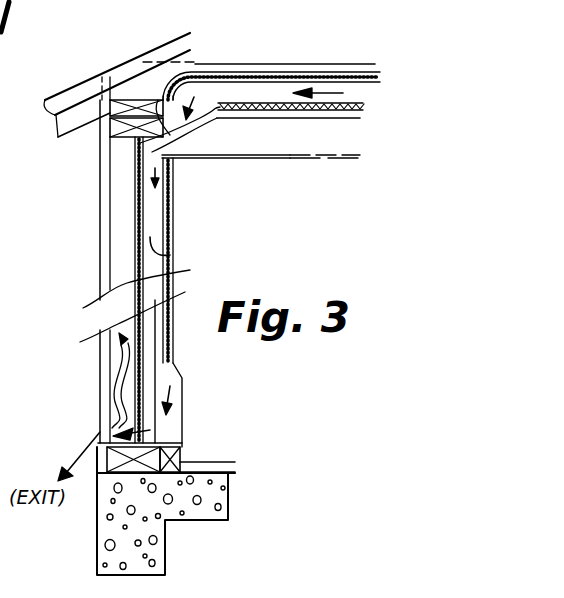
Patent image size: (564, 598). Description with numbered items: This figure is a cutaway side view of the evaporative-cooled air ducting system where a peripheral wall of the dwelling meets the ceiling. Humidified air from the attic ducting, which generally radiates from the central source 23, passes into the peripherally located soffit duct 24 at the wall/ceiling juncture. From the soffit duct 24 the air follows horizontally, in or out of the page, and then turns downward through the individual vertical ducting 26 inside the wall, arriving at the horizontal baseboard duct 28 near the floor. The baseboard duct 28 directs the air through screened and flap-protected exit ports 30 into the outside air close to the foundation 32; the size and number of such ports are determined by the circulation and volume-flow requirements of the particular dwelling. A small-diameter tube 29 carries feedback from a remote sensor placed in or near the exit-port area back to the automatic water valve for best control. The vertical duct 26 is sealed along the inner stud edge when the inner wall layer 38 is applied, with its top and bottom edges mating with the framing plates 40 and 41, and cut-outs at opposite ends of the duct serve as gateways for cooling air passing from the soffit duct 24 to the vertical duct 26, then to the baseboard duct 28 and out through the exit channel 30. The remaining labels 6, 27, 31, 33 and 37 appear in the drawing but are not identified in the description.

The wall structure 6 is at (315, 259).
The central source 23 is at (257, 92).
The soffit duct 24 is at (170, 133).
The vertical ducting 26 is at (176, 251).
The insulation 27 is at (225, 77).
The baseboard duct 28 is at (182, 430).
The small diameter tube 29 is at (117, 350).
The exit port 30 is at (100, 433).
The exterior sheathing 31 is at (100, 264).
The foundation 32 is at (97, 520).
The air outlet passage 33 is at (117, 417).
The exterior wall 37 is at (52, 260).
The inner wall layer 38 is at (173, 230).
The framing plate 40 is at (213, 158).
The framing plate 41 is at (180, 450).